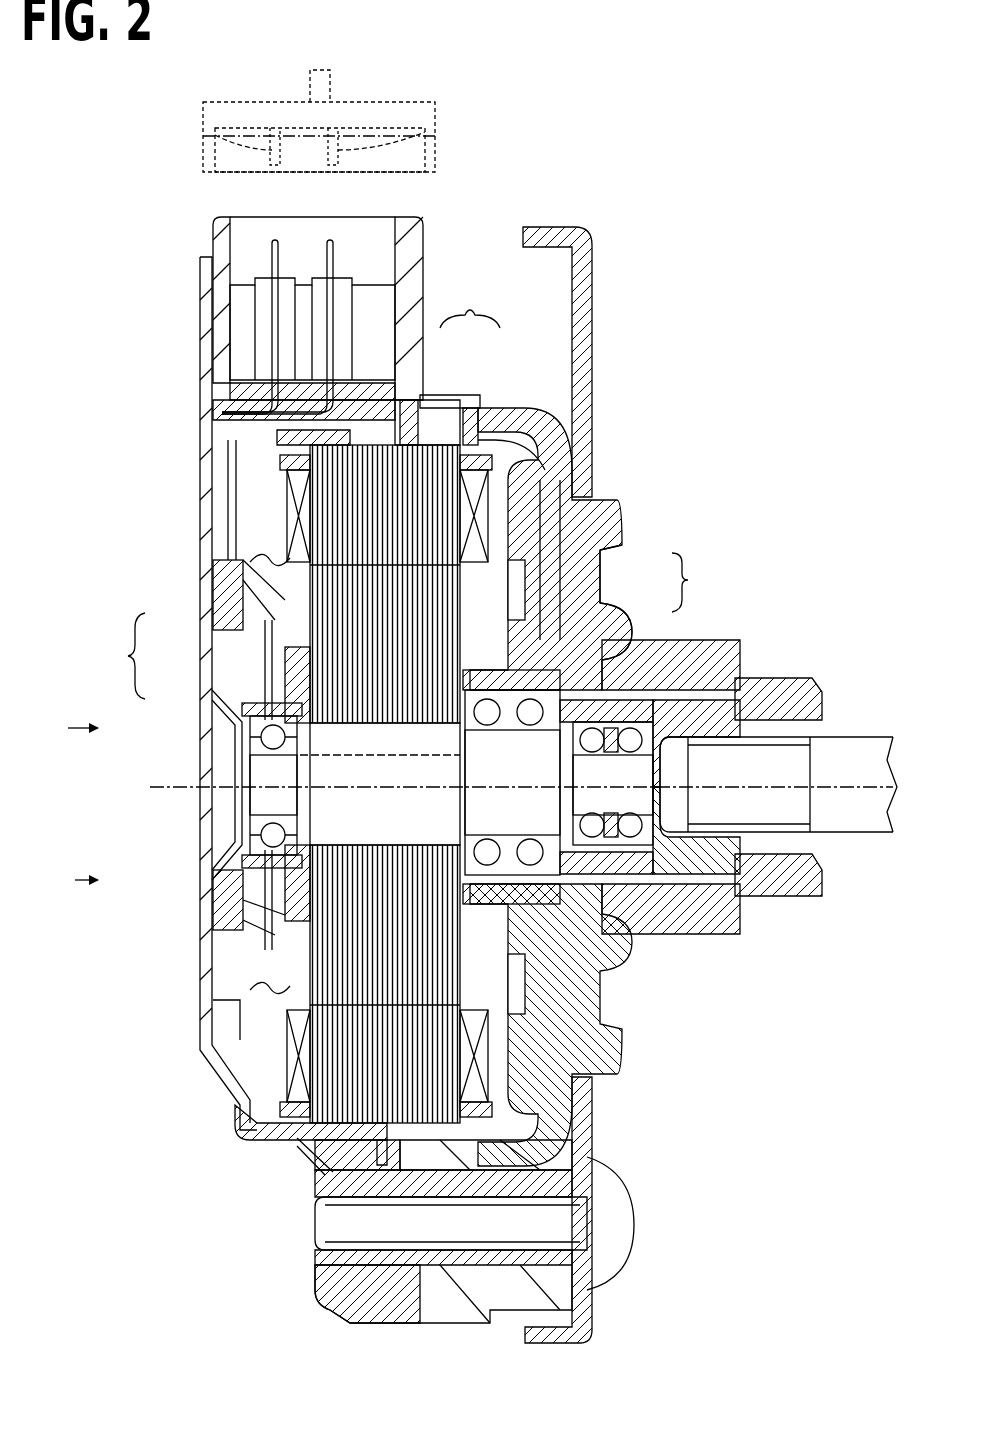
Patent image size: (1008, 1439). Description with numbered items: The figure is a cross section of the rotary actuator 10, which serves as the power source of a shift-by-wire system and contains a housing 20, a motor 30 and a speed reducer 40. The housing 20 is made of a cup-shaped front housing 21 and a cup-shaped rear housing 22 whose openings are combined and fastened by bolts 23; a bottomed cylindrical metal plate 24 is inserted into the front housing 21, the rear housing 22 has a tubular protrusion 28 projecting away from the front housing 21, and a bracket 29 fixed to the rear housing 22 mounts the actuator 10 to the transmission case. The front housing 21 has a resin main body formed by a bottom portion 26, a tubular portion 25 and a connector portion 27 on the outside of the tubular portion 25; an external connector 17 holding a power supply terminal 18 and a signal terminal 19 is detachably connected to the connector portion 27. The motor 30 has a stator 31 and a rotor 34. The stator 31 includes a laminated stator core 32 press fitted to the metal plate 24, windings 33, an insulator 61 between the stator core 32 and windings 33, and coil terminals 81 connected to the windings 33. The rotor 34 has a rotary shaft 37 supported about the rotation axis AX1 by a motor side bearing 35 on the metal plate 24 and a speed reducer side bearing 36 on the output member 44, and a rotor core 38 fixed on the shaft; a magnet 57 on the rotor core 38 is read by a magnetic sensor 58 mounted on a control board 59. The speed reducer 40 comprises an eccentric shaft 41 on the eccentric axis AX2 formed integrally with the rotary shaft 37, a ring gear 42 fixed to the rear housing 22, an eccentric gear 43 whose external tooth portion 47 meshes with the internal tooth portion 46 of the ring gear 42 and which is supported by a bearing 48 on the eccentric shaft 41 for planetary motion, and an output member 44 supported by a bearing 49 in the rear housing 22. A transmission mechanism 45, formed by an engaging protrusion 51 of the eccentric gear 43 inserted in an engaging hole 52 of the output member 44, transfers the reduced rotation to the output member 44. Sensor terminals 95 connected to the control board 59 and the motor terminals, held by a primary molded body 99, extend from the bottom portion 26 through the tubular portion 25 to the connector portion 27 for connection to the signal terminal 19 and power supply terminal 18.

The rotary actuator 10 is at (200, 232).
The external connector 17 is at (208, 104).
The power supply terminal 18 is at (218, 133).
The signal terminal 19 is at (435, 135).
The housing 20 is at (451, 365).
The front housing 21 is at (400, 415).
The rear housing 22 is at (472, 420).
The bolt 23 is at (612, 1222).
The metal plate 24 is at (208, 398).
The tubular portion 25 is at (300, 1163).
The bottom portion 26 is at (262, 760).
The connector portion 27 is at (222, 312).
The tubular protrusion 28 is at (780, 868).
The bracket 29 is at (596, 408).
The motor 30 is at (277, 784).
The stator 31 is at (306, 596).
The stator core 32 is at (505, 453).
The winding 33 is at (295, 510).
The rotor 34 is at (300, 653).
The motor side bearing 35 is at (262, 838).
The speed reducer side bearing 36 is at (628, 830).
The rotary shaft 37 is at (258, 865).
The rotor core 38 is at (262, 704).
The speed reducer 40 is at (560, 518).
The eccentric shaft 41 is at (620, 658).
The ring gear 42 is at (580, 498).
The eccentric gear 43 is at (545, 958).
The output member 44 is at (748, 708).
The transmission mechanism 45 is at (662, 602).
The internal tooth portion 46 is at (595, 1070).
The external tooth portion 47 is at (570, 1034).
The bearing 48 is at (575, 898).
The bearing 49 is at (690, 860).
The engaging protrusion 51 is at (604, 578).
The engaging hole 52 is at (608, 598).
The magnet 57 is at (240, 884).
The magnetic sensor 58 is at (262, 912).
The control board 59 is at (260, 938).
The insulator 61 is at (225, 448).
The coil terminal 81 is at (208, 588).
The sensor terminal 95 is at (300, 260).
The primary molded body 99 is at (232, 392).
The rotation axis AX1 is at (290, 788).
The eccentric axis AX2 is at (300, 754).